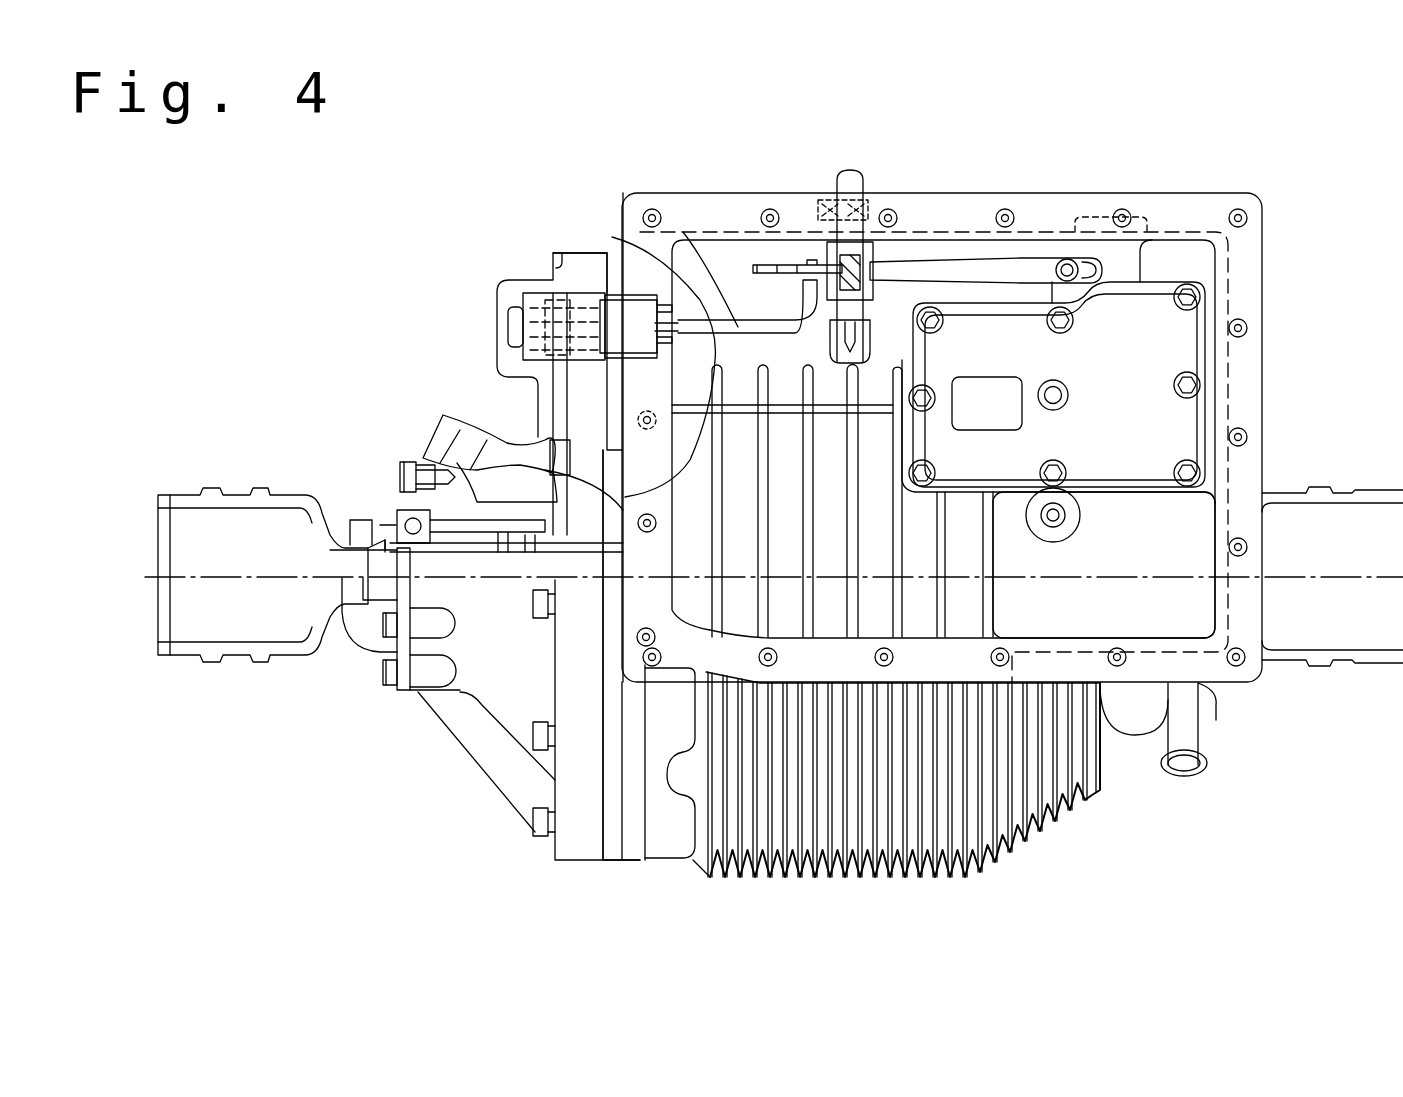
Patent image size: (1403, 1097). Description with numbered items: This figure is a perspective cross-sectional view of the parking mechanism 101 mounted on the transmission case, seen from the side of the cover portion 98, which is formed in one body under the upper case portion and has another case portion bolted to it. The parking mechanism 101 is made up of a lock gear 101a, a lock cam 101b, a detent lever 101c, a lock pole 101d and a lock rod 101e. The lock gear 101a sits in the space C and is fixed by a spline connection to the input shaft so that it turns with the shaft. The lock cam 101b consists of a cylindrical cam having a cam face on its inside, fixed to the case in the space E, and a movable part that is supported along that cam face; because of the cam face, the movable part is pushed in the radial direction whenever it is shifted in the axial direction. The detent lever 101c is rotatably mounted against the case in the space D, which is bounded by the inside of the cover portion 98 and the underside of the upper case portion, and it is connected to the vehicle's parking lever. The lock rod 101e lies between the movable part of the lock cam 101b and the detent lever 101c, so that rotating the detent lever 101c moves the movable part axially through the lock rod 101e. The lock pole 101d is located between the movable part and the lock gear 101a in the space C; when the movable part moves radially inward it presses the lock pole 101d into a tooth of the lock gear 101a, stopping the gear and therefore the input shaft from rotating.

The cover portion 98 is at (1035, 203).
The parking mechanism 101 is at (750, 262).
The lock gear 101a is at (440, 466).
The lock cam 101b is at (588, 283).
The detent lever 101c is at (800, 275).
The lock pole 101d is at (560, 423).
The lock rod 101e is at (702, 267).
The space C is at (500, 458).
The space D is at (592, 285).
The space E is at (540, 298).